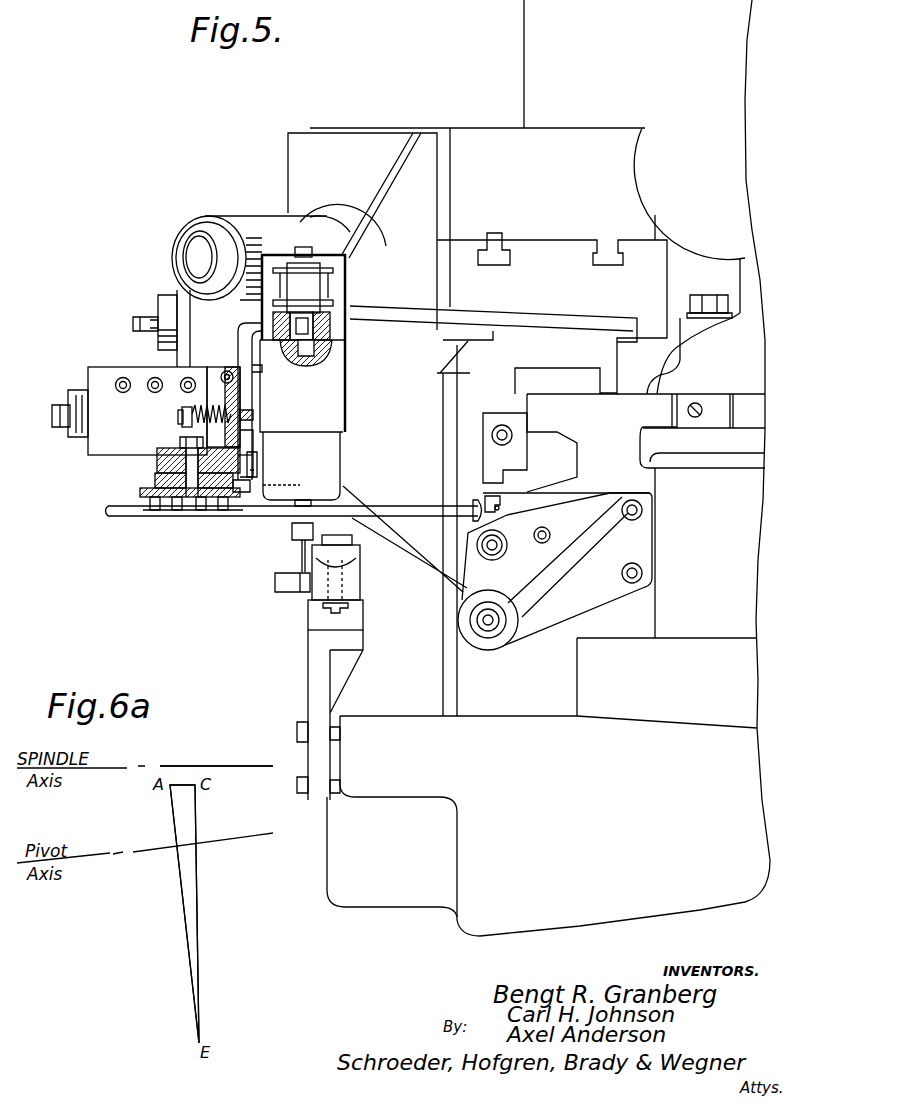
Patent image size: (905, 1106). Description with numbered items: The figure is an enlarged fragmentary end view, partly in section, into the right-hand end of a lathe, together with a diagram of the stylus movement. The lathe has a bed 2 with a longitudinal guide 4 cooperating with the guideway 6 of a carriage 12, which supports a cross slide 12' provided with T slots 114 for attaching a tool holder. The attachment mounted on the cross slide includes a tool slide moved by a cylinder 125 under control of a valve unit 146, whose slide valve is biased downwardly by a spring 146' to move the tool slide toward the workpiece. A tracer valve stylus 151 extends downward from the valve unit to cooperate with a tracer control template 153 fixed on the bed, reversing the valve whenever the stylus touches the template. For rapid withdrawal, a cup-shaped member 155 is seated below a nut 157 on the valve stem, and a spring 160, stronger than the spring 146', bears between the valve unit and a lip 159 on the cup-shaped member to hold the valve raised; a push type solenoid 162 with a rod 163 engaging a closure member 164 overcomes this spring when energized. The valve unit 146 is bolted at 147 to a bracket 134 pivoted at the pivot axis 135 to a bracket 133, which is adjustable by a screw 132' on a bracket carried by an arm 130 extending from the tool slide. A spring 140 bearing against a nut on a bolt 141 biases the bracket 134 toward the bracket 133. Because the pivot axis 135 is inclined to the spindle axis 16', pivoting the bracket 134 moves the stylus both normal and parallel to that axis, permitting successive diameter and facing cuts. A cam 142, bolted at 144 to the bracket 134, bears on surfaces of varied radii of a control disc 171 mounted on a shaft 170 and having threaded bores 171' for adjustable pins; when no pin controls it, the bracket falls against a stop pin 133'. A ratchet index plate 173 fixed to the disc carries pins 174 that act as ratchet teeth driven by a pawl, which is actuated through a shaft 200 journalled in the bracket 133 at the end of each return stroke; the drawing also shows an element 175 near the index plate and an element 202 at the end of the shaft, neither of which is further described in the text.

In FIG. 5, the bed 2 is at (588, 833).
In FIG. 5, the guide 4 is at (622, 484).
In FIG. 5, the guideway 6 is at (562, 373).
In FIG. 5, the carriage 12 is at (477, 358).
In FIG. 5, the cross slide 12' is at (601, 298).
In FIG. 5, the T slots 114 is at (597, 258).
In FIG. 5, the cylinder 125 is at (258, 218).
In FIG. 5, the arm 130 is at (415, 247).
In FIG. 5, the screw 132' is at (59, 427).
In FIG. 5, the bracket 133 is at (201, 398).
In FIG. 5, the stop pin 133' is at (278, 447).
In FIG. 5, the bracket 134 is at (250, 398).
In FIG. 5, the pivot axis 135 is at (227, 368).
In FIG. 6A, the pivot axis 135 is at (222, 842).
In FIG. 5, the spring 140 is at (200, 404).
In FIG. 5, the bolt 141 is at (182, 417).
In FIG. 5, the cam 142 is at (252, 478).
In FIG. 5, the bolt 144 is at (263, 488).
In FIG. 5, the valve unit 146 is at (327, 385).
In FIG. 5, the spring 146' is at (302, 343).
In FIG. 5, the bolt 147 is at (246, 376).
In FIG. 5, the tracer valve stylus 151 is at (302, 562).
In FIG. 5, the tracer control template 153 is at (345, 563).
In FIG. 5, the cup-shaped member 155 is at (312, 348).
In FIG. 5, the nut 157 is at (302, 335).
In FIG. 5, the lip 159 is at (315, 320).
In FIG. 5, the spring 160 is at (290, 330).
In FIG. 5, the push type solenoid 162 is at (330, 280).
In FIG. 5, the rod 163 is at (320, 315).
In FIG. 5, the closure member 164 is at (317, 321).
In FIG. 5, the shaft 170 is at (184, 450).
In FIG. 5, the control disc 171 is at (170, 462).
In FIG. 5, the threaded bores 171' is at (151, 483).
In FIG. 5, the ratchet index plate 173 is at (148, 493).
In FIG. 5, the pins 174 is at (156, 503).
In FIG. 5, the pin 175 is at (268, 512).
In FIG. 5, the shaft 200 is at (380, 508).
In FIG. 5, the rod end 202 is at (480, 498).
In FIG. 6A, the spindle axis 16' is at (216, 749).